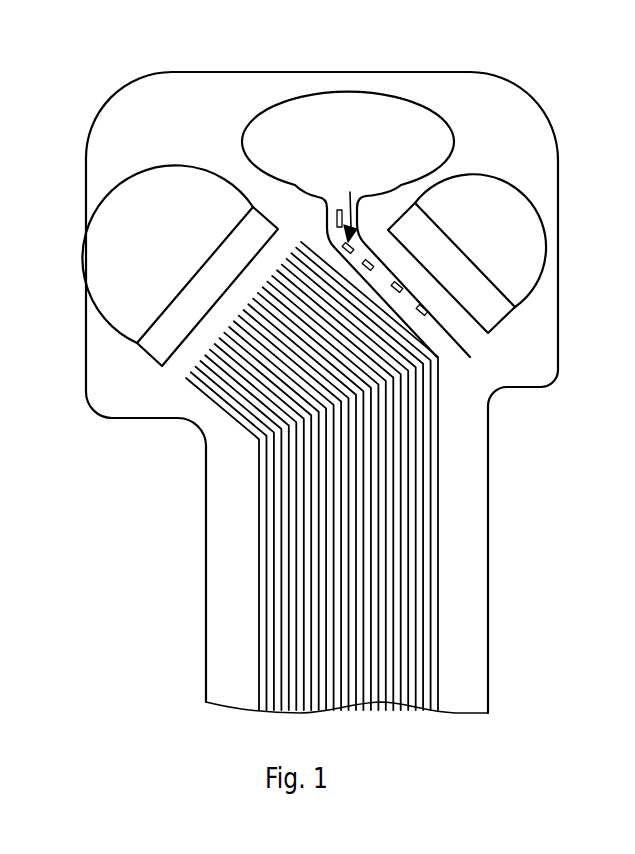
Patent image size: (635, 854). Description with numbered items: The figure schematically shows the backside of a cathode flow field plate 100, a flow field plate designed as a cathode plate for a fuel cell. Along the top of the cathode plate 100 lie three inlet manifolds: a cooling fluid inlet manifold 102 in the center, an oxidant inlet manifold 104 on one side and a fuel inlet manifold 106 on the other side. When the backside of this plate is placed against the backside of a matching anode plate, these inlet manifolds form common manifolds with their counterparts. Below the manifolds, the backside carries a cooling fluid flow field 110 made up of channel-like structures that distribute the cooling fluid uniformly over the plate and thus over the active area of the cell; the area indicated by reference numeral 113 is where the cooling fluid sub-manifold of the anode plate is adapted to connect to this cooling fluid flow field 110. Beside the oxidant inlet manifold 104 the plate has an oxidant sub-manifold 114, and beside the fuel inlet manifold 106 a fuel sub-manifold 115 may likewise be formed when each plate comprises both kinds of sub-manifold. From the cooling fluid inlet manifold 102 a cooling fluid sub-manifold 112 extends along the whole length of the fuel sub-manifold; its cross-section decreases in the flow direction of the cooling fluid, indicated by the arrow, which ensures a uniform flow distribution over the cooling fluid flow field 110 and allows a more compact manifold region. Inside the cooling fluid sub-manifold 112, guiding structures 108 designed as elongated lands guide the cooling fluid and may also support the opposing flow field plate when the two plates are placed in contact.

The cathode flow field plate 100 is at (211, 41).
The cooling fluid inlet manifold 102 is at (298, 125).
The oxidant inlet manifold 104 is at (153, 264).
The fuel inlet manifold 106 is at (499, 242).
The guiding structures 108 is at (403, 288).
The cooling fluid flow field 110 is at (333, 476).
The cooling fluid sub-manifold 112 is at (336, 205).
The area of connection to the cooling fluid flow field 113 is at (242, 395).
The oxidant sub-manifold 114 is at (200, 300).
The fuel sub-manifold 115 is at (463, 285).